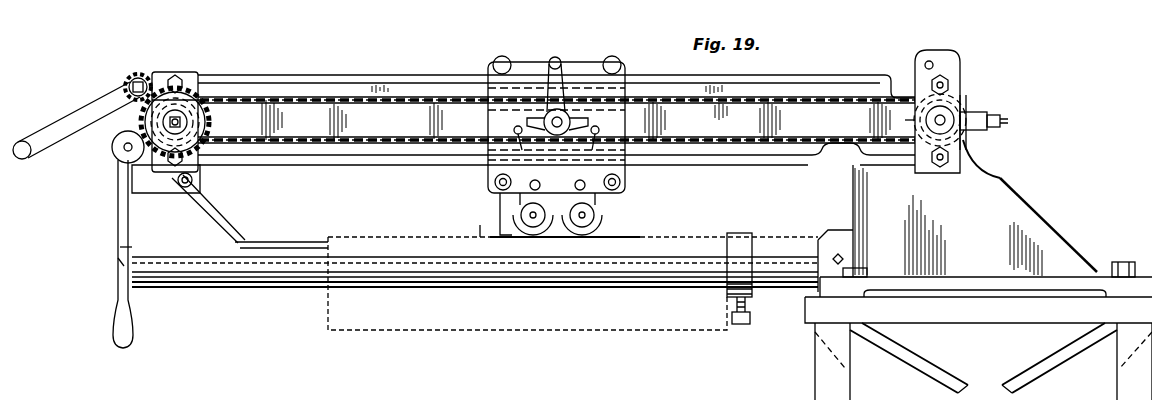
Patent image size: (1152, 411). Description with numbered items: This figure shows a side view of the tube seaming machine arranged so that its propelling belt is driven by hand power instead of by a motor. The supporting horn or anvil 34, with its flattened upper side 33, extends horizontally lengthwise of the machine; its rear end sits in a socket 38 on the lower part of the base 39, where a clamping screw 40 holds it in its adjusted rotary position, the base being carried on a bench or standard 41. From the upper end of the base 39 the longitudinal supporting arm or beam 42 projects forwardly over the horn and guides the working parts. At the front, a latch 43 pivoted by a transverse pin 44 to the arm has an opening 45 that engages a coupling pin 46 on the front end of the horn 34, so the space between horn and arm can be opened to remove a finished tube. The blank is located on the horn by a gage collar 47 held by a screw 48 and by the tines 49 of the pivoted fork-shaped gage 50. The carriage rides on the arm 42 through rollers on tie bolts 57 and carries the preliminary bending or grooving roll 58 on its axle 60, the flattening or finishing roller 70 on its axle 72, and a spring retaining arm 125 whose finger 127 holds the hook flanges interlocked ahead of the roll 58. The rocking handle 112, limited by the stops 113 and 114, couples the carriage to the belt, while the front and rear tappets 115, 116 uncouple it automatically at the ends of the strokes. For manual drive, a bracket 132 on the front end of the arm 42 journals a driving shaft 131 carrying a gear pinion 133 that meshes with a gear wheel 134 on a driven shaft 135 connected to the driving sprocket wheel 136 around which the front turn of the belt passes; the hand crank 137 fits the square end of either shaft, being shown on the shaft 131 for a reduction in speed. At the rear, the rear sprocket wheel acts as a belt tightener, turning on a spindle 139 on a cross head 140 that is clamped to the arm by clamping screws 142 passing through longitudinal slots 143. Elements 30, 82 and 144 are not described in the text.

The carriage base 30 is at (405, 331).
The flattened upper side 33 is at (358, 231).
The supporting horn or anvil 34 is at (215, 283).
The socket 38 is at (826, 230).
The base 39 is at (1028, 218).
The clamping screw 40 is at (834, 264).
The frame or bench or standard 41 is at (870, 372).
The supporting arm or beam 42 is at (380, 84).
The latch 43 is at (105, 254).
The transverse pin 44 is at (124, 148).
The opening 45 is at (118, 247).
The coupling pin 46 is at (115, 267).
The gage collar 47 is at (748, 240).
The screw 48 is at (742, 325).
The tines 49 is at (290, 240).
The fork-shaped gage 50 is at (222, 228).
The tie bolts 57 is at (194, 180).
The preliminary bending or grooving roll 58 is at (534, 238).
The pivot pin or axle 60 is at (412, 139).
The flattening or finishing roller 70 is at (596, 216).
The axle or pin 72 is at (569, 214).
The rail end 82 is at (903, 109).
The rocking handle or shifting arm 112 is at (558, 63).
The stop 113 is at (531, 144).
The stop 114 is at (581, 144).
The front tappet 115 is at (594, 113).
The rear tappet 116 is at (522, 113).
The retaining arm 125 is at (500, 200).
The finger 127 is at (490, 228).
The driving shaft 131 is at (148, 80).
The bracket 132 is at (198, 76).
The gear pinion 133 is at (137, 73).
The gear wheel 134 is at (205, 145).
The driven shaft 135 is at (172, 127).
The driving sprocket wheel 136 is at (205, 100).
The hand crank 137 is at (40, 132).
The spindle or pivot pin 139 is at (952, 112).
The cross head 140 is at (925, 168).
The clamping screws 142 is at (944, 80).
The longitudinal slots 143 is at (965, 92).
The adjusting screw 144 is at (987, 132).